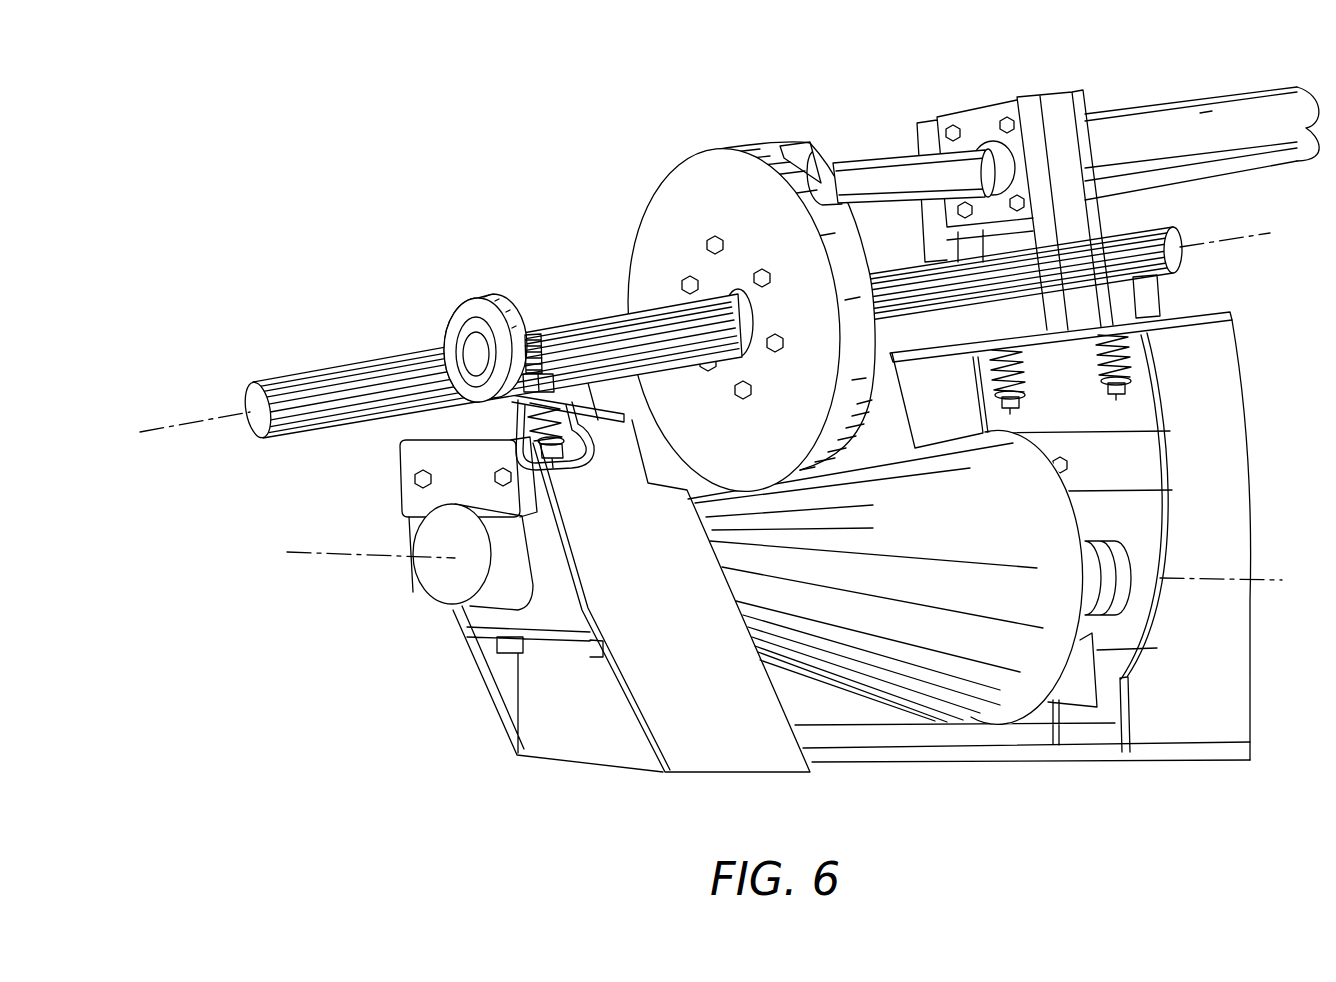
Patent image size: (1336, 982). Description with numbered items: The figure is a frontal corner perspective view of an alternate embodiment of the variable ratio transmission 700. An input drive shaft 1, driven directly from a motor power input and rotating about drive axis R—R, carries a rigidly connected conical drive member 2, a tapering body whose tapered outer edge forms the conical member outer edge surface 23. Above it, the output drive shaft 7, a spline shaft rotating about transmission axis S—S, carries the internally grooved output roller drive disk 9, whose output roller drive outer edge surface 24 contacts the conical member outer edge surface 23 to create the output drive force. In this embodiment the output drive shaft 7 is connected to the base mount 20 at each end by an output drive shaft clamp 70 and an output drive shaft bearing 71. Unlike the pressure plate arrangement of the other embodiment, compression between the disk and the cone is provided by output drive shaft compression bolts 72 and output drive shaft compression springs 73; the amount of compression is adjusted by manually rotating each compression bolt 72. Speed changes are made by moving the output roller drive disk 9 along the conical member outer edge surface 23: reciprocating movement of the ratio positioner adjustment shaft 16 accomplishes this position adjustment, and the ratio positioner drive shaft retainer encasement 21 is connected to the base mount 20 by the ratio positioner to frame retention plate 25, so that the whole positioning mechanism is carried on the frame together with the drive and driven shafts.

The variable ratio transmission 700 is at (717, 430).
The output drive shaft 7 is at (303, 385).
The output drive shaft clamp 70 is at (474, 331).
The output drive shaft bearing 71 is at (462, 337).
The output roller drive disk 9 is at (670, 218).
The output roller drive outer edge surface 24 is at (722, 165).
The ratio positioner adjustment shaft 16 is at (872, 158).
The ratio positioner to frame retention plate 25 is at (968, 115).
The ratio positioner drive shaft retainer encasement 21 is at (1196, 99).
The output drive shaft compression springs 73 is at (595, 447).
The output drive shaft compression bolts 72 is at (570, 468).
The conical member outer edge surface 23 is at (890, 446).
The conical drive member 2 is at (909, 618).
The base mount 20 is at (1253, 500).
The input drive shaft 1 is at (445, 592).